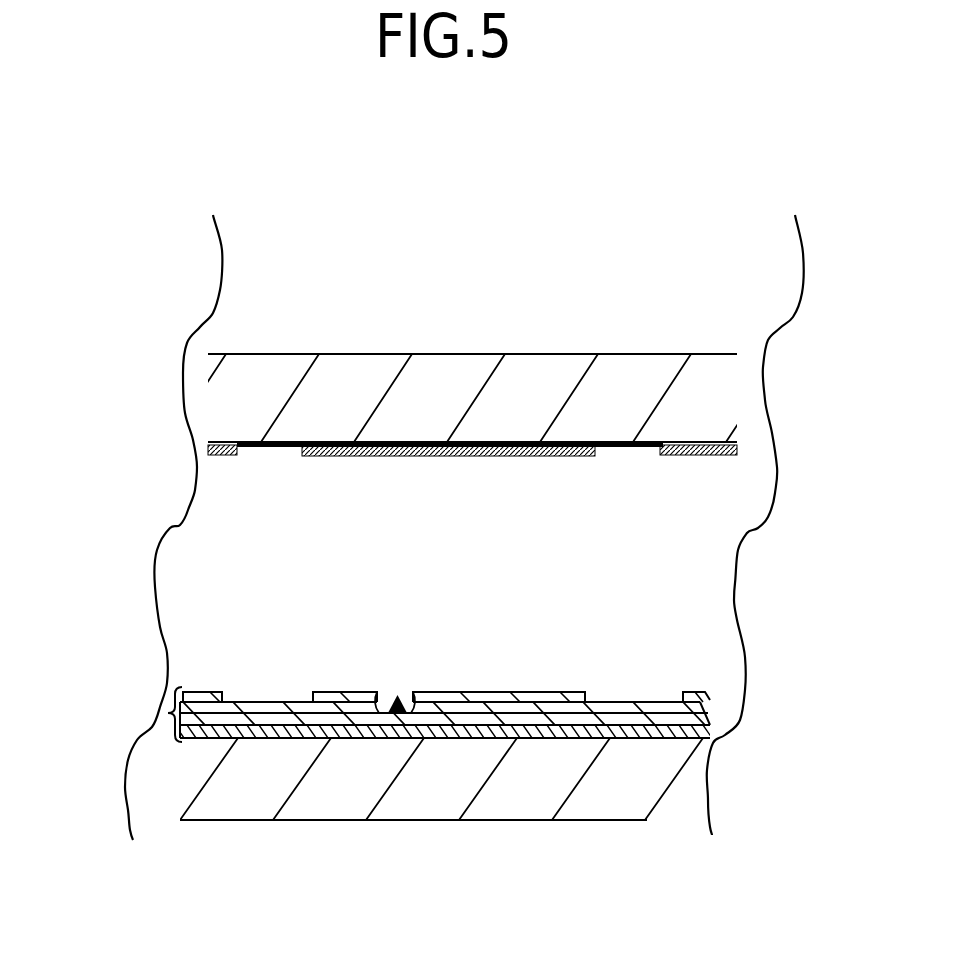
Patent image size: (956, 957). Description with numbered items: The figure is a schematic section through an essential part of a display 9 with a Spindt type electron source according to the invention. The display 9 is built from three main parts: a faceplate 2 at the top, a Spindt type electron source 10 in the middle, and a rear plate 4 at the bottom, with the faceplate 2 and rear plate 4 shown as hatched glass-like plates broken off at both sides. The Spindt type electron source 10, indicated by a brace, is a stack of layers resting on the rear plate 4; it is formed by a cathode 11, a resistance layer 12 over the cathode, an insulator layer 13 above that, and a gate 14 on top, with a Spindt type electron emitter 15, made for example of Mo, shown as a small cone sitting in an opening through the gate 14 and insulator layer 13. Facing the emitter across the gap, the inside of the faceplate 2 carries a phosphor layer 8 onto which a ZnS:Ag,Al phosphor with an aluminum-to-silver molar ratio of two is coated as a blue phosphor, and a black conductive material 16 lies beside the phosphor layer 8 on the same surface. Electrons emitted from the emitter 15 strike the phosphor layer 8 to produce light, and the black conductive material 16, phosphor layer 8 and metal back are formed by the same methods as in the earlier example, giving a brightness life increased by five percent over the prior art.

The faceplate 2 is at (460, 378).
The rear plate 4 is at (515, 800).
The phosphor layer 8 is at (465, 453).
The display 9 is at (245, 168).
The Spindt type electron source 10 is at (170, 713).
The cathode 11 is at (657, 738).
The resistance layer 12 is at (705, 718).
The insulator layer 13 is at (660, 703).
The gate 14 is at (522, 693).
The Spindt type electron emitter 15 is at (390, 695).
The black conductive material 16 is at (267, 445).